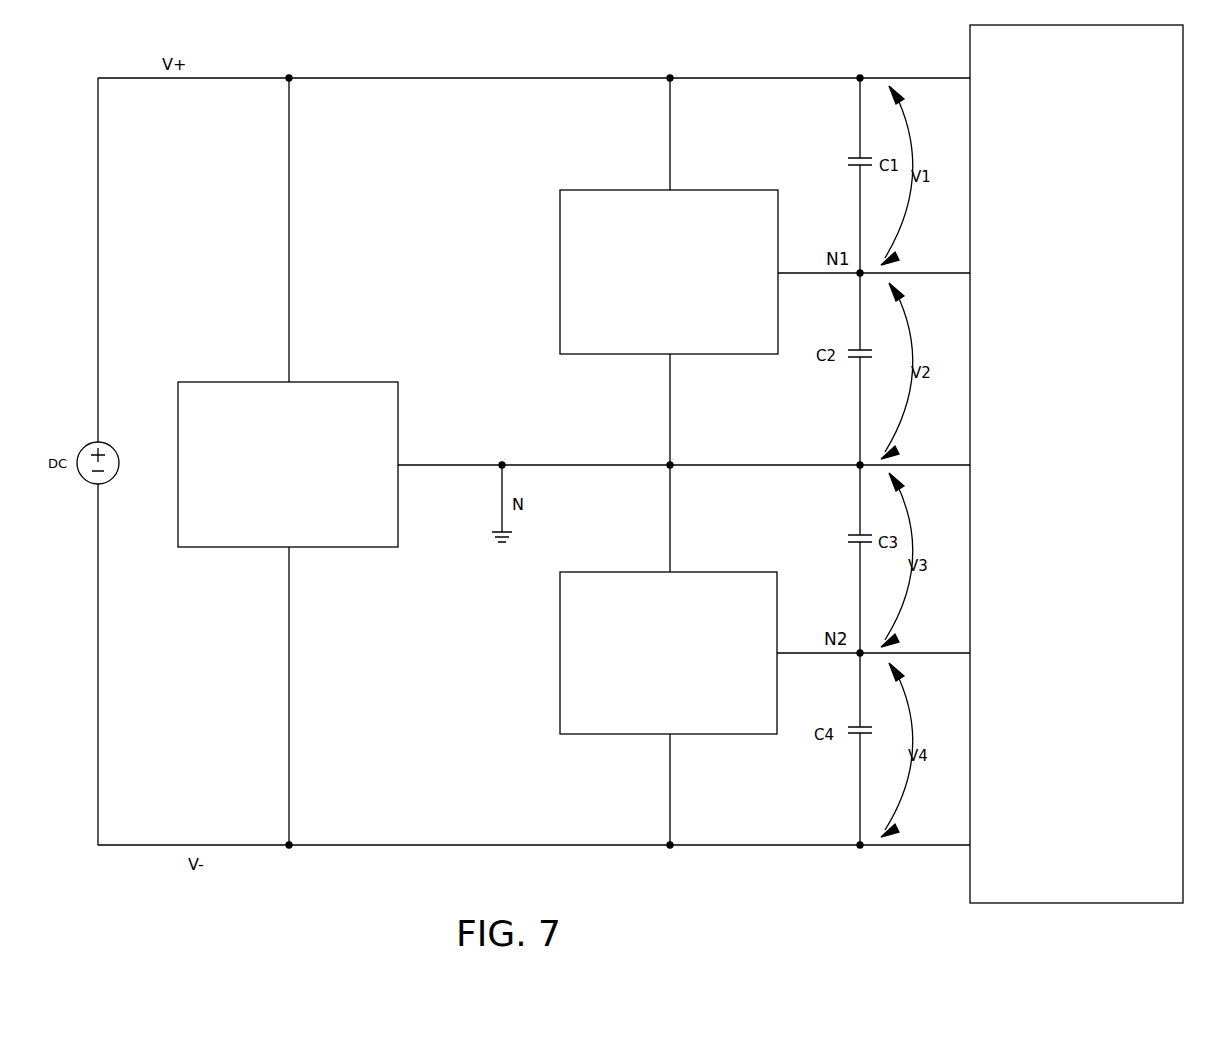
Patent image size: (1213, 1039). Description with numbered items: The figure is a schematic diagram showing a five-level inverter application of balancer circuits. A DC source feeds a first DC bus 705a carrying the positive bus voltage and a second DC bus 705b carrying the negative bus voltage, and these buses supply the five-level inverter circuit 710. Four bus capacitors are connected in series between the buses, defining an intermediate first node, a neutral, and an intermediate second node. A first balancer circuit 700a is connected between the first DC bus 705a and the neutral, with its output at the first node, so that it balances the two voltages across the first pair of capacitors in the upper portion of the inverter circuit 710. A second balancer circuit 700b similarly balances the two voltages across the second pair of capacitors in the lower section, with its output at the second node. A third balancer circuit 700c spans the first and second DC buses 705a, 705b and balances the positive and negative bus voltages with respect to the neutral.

The first DC bus 705a is at (314, 78).
The second DC bus 705b is at (355, 845).
The first balancer circuit 700a is at (725, 190).
The second balancer circuit 700b is at (733, 572).
The third balancer circuit 700c is at (343, 382).
The 5-level inverter circuit 710 is at (1072, 903).